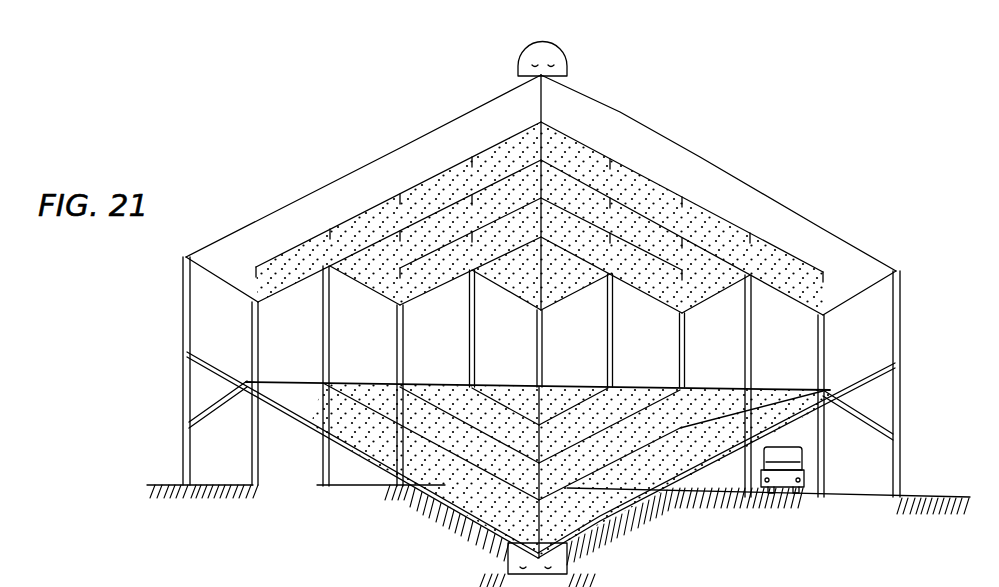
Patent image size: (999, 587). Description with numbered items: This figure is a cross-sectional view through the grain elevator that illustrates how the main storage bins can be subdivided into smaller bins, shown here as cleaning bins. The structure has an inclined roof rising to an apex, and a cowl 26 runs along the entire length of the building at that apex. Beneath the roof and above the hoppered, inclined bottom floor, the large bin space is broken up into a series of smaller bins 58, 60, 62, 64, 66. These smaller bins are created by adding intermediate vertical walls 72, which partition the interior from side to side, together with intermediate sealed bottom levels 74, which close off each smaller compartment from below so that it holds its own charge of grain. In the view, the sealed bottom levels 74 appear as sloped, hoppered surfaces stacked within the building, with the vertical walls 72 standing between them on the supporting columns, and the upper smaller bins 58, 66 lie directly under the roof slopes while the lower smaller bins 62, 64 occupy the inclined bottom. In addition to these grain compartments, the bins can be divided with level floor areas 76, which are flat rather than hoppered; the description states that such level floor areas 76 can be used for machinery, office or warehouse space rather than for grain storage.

The cowl 26 is at (525, 48).
The smaller bin 58 is at (420, 200).
The smaller bin 60 is at (198, 377).
The smaller bin 62 is at (452, 480).
The smaller bin 64 is at (637, 478).
The smaller bin 66 is at (652, 195).
The intermediate vertical wall 72 is at (549, 148).
The intermediate sealed bottom level 74 is at (404, 305).
The level floor area 76 is at (283, 378).